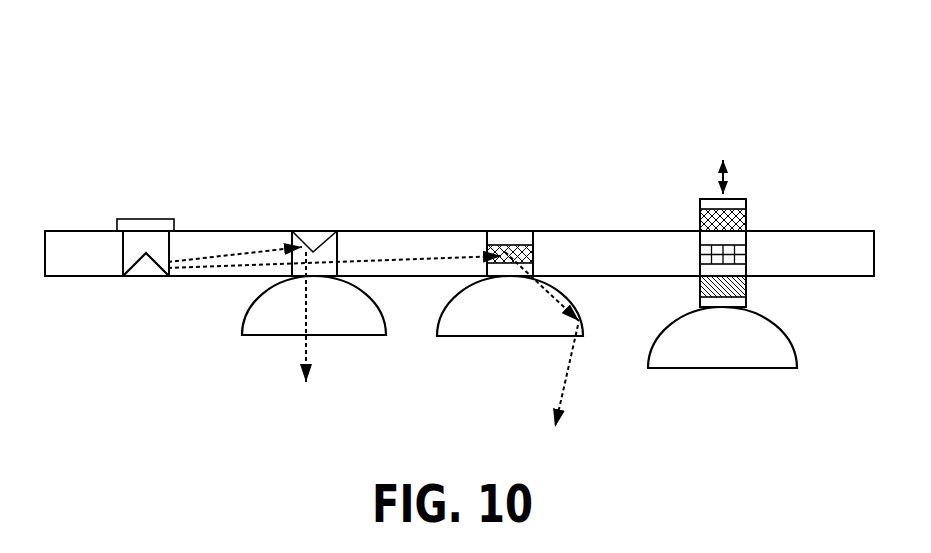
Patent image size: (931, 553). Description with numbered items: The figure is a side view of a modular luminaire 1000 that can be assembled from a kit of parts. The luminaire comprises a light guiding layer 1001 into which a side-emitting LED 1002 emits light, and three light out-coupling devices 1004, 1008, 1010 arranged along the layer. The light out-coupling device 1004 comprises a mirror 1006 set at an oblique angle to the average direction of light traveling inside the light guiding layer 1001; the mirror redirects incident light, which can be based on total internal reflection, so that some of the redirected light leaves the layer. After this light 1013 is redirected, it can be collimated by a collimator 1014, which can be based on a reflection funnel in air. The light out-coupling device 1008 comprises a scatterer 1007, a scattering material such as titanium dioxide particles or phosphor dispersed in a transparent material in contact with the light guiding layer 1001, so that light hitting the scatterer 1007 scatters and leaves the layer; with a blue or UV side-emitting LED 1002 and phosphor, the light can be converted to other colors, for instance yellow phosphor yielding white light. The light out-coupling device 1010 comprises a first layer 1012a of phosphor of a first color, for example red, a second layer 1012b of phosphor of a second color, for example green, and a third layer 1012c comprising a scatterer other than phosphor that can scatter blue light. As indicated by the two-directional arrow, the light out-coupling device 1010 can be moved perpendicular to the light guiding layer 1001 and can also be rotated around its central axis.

The luminaire 1000 is at (146, 108).
The light guiding layer 1001 is at (193, 277).
The side-emitting LED 1002 is at (122, 255).
The light out-coupling device 1004 is at (337, 248).
The mirror 1006 is at (310, 231).
The scatterer 1007 is at (515, 245).
The light out-coupling device 1008 is at (533, 252).
The light out-coupling device 1010 is at (749, 192).
The first layer 1012a is at (700, 250).
The second layer 1012b is at (746, 222).
The third layer 1012c is at (746, 283).
The light 1013 is at (303, 343).
The collimator 1014 is at (362, 337).